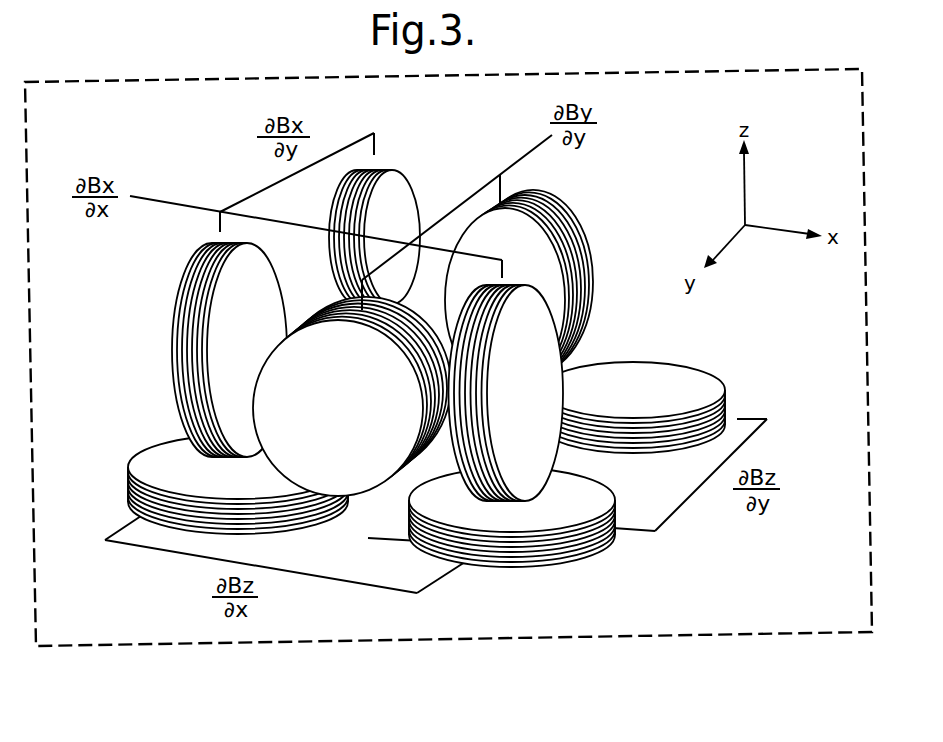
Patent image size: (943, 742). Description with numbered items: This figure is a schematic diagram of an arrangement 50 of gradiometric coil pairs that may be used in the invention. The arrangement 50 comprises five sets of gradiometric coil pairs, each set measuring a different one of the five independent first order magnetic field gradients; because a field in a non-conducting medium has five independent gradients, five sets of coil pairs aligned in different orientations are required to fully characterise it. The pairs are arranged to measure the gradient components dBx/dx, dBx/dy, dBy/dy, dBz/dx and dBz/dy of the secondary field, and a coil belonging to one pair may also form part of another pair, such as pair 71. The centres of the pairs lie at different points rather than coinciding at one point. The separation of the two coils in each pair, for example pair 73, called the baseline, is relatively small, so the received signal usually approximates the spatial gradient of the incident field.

The arrangement of gradiometric coil pairs 50 is at (78, 662).
The gradiometric coil pair 71 is at (385, 196).
The gradiometric coil pair 73 is at (278, 519).